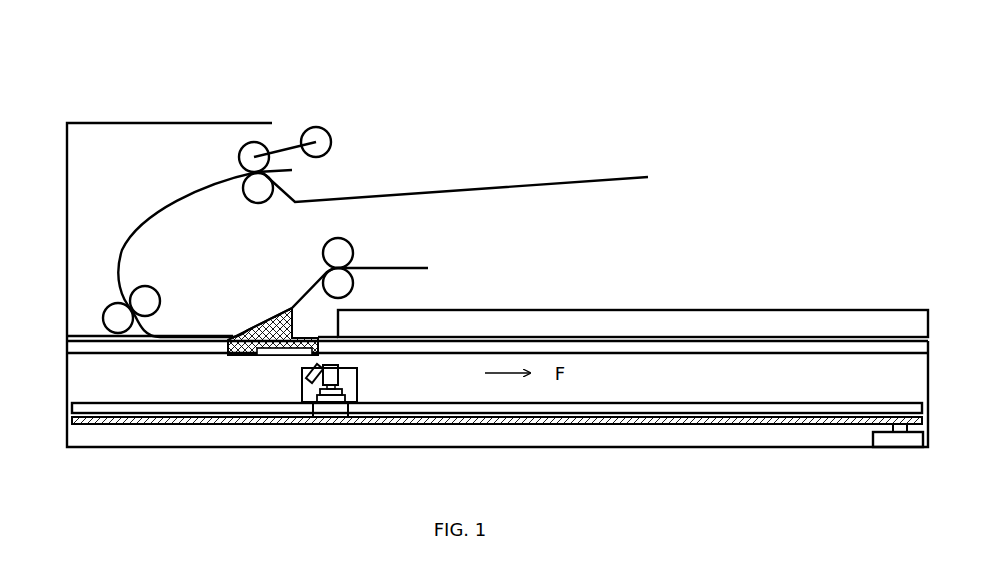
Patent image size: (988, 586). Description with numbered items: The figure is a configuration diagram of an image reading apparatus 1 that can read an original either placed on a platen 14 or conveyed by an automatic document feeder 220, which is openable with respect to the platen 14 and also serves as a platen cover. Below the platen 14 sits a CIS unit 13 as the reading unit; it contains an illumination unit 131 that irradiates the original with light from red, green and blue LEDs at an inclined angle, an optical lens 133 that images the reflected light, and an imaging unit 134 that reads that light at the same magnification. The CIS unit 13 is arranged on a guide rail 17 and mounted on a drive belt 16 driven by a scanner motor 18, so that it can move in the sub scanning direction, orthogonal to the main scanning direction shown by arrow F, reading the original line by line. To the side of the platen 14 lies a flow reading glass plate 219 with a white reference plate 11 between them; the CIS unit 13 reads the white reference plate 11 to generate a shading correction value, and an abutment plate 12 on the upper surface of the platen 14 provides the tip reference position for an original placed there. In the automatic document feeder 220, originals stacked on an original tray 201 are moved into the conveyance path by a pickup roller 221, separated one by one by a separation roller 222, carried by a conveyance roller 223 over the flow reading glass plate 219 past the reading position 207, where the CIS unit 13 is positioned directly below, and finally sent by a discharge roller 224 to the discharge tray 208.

The image reading apparatus 1 is at (706, 67).
The white reference plate 11 is at (265, 350).
The abutment plate 12 is at (283, 307).
The CIS unit 13 is at (233, 382).
The platen 14 is at (582, 347).
The drive belt 16 is at (760, 425).
The guide rail 17 is at (777, 404).
The scanner motor 18 is at (885, 440).
The illumination unit 131 is at (303, 370).
The optical lens 133 is at (340, 370).
The imaging unit 134 is at (353, 397).
The original tray 201 is at (572, 183).
The reading position 207 is at (218, 336).
The discharge tray 208 is at (793, 310).
The flow reading glass plate 219 is at (75, 343).
The automatic document feeder 220 is at (130, 123).
The pickup roller 221 is at (323, 130).
The separation roller 222 is at (238, 158).
The conveyance roller 223 is at (122, 305).
The discharge roller 224 is at (352, 250).